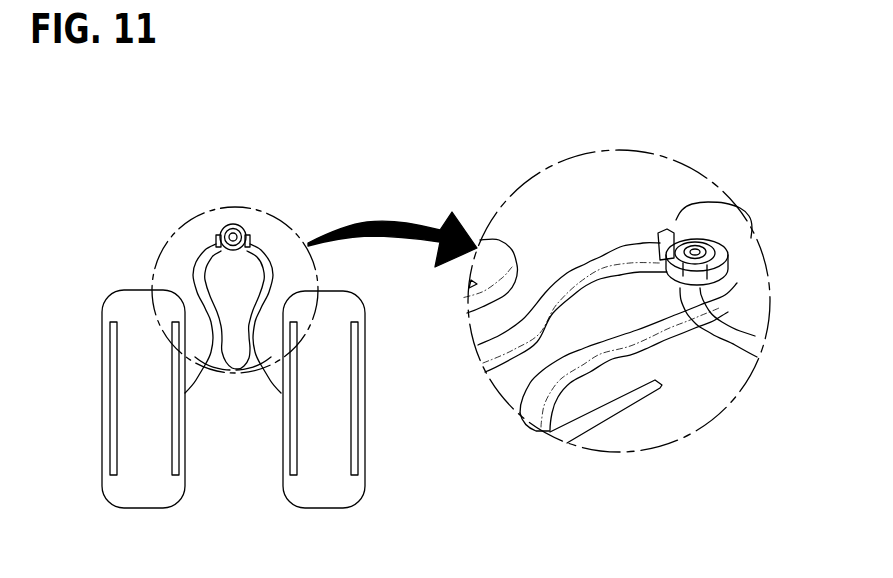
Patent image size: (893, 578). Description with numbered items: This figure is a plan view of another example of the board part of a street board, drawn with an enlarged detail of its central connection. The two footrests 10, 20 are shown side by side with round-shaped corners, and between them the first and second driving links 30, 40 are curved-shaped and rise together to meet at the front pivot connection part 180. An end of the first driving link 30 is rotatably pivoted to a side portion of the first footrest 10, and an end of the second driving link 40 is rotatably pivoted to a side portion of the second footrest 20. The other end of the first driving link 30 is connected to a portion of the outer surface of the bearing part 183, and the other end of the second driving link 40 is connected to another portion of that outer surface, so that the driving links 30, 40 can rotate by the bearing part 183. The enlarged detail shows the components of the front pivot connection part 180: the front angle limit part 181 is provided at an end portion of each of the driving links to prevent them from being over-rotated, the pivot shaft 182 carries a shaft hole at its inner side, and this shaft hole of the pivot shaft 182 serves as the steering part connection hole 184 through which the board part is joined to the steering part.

The first footrest 10 is at (110, 484).
The second footrest 20 is at (358, 483).
The first driving link 30 is at (197, 258).
The second driving link 40 is at (266, 256).
The front pivot connection part 180 is at (228, 207).
The front angle limit part 181 is at (720, 242).
The pivot shaft 182 is at (757, 357).
The bearing part 183 is at (745, 335).
The steering part connection hole 184 is at (667, 232).